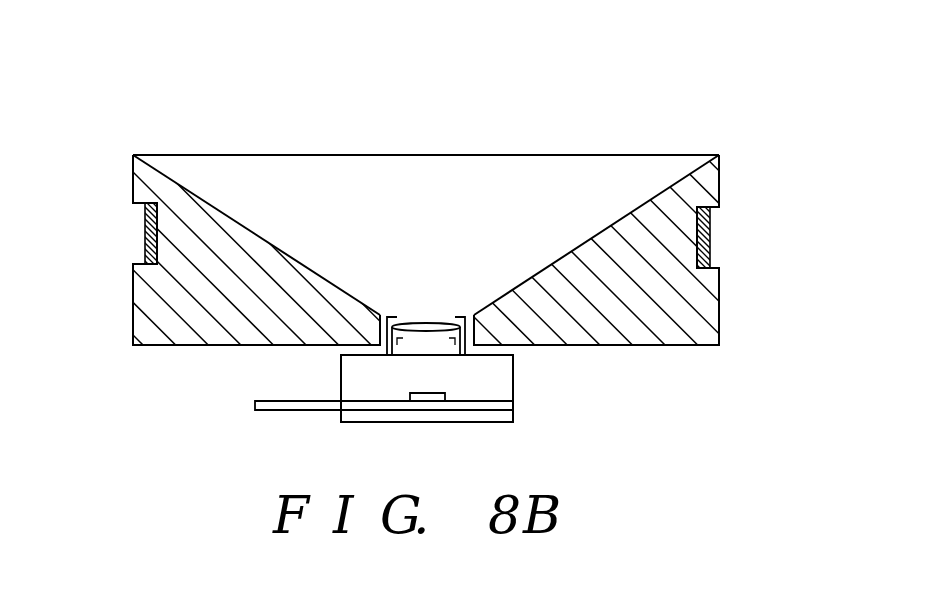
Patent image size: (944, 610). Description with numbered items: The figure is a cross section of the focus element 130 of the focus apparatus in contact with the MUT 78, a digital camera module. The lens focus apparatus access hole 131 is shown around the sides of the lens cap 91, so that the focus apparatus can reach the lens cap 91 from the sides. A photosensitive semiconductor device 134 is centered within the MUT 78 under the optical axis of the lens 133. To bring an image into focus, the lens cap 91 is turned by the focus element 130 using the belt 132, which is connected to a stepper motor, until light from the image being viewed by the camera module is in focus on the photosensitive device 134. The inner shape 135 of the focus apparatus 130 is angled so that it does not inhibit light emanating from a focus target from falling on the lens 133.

The focus element 130 is at (722, 178).
The lens focus apparatus access hole 131 is at (378, 326).
The belt 132 is at (142, 230).
The lens 133 is at (426, 322).
The photosensitive semiconductor device 134 is at (425, 400).
The inner shape 135 is at (184, 191).
The lens cap 91 is at (388, 316).
The MUT 78 is at (515, 384).